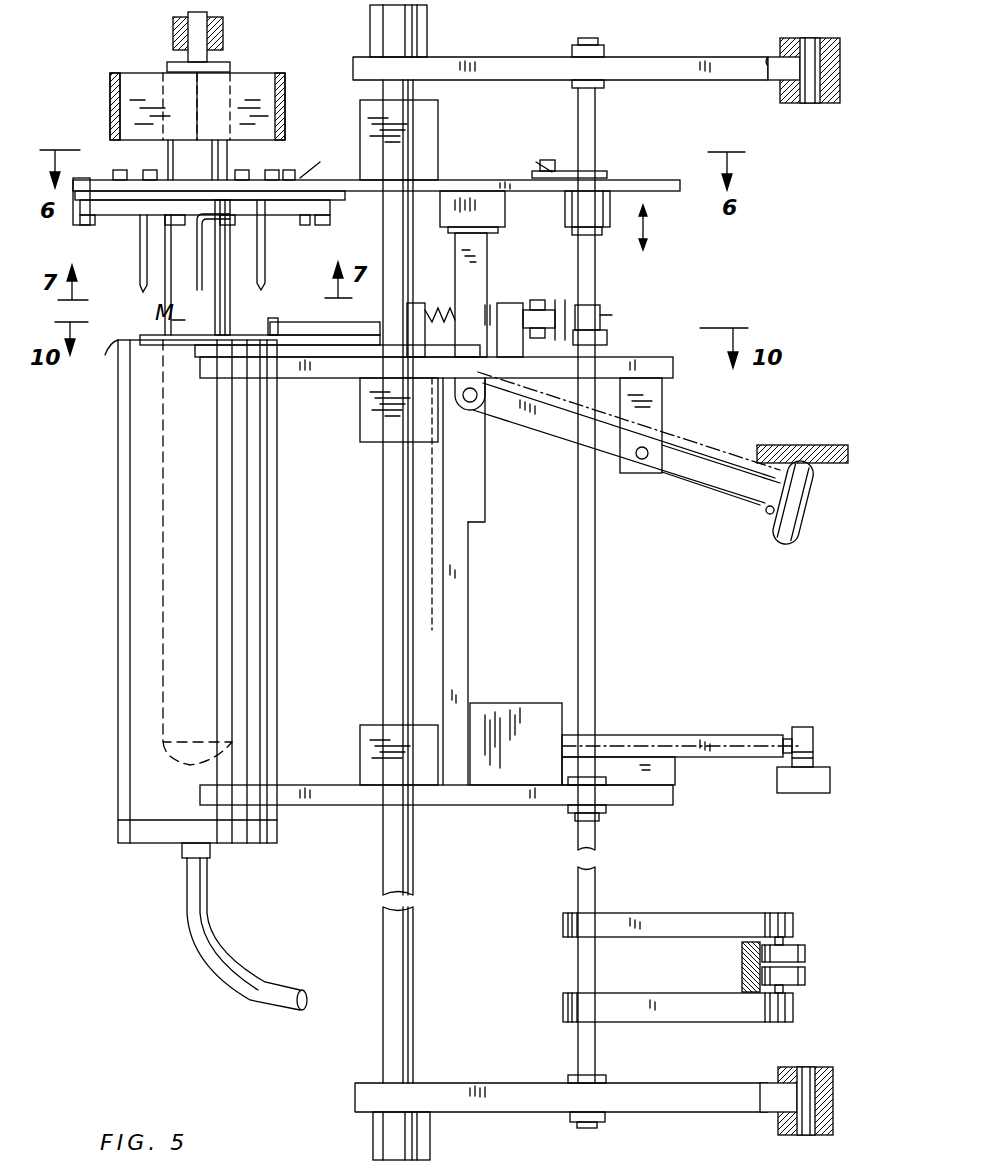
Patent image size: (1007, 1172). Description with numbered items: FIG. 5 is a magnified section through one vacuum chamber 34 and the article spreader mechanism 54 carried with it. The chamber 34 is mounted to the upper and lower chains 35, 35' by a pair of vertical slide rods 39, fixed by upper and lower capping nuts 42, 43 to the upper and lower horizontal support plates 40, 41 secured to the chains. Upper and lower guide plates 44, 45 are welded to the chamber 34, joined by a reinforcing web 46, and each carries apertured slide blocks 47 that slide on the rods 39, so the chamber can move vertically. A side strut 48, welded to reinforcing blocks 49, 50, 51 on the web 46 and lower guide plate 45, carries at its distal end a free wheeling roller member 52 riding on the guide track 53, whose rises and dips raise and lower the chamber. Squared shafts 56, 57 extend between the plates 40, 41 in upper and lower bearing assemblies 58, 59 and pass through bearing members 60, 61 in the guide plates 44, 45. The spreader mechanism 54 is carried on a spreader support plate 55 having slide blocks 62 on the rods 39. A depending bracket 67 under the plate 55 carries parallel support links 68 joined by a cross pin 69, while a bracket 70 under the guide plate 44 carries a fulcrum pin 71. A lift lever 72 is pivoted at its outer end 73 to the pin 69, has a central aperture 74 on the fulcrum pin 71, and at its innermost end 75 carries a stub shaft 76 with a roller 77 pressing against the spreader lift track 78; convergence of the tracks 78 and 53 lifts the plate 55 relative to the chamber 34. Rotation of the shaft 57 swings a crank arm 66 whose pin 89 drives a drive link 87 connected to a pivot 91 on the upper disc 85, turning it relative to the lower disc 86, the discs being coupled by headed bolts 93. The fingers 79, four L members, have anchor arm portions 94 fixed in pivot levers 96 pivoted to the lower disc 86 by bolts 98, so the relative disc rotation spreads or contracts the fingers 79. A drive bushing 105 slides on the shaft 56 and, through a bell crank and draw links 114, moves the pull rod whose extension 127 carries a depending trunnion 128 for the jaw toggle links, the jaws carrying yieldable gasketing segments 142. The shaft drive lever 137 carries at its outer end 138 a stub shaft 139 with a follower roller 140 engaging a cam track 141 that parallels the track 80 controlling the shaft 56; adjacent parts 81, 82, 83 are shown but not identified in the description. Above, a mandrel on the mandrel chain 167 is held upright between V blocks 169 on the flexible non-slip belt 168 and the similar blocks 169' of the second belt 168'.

The vacuum chamber 34 is at (118, 800).
The upper chain 35 is at (813, 52).
The lower chain 35' is at (796, 1085).
The slide rod 39 is at (383, 1057).
The upper horizontal support plate 40 is at (727, 55).
The lower horizontal support plate 41 is at (665, 1112).
The upper capping nut 42 is at (428, 30).
The lower capping nut 43 is at (373, 1145).
The upper guide plate 44 is at (290, 378).
The lower guide plate 45 is at (325, 805).
The reinforcing web 46 is at (443, 495).
The apertured slide block 47 is at (350, 770).
The side strut 48 is at (742, 735).
The reinforcing block 49 is at (648, 757).
The reinforcing block 50 is at (512, 703).
The reinforcing block 51 is at (468, 632).
The free wheeling roller member 52 is at (805, 727).
The guide track 53 is at (812, 793).
The article spreader mechanism 54 is at (304, 160).
The spreader support plate 55 is at (640, 180).
The squared shaft 56 is at (605, 955).
The squared shaft 57 is at (578, 880).
The upper bearing assembly 58 is at (600, 45).
The lower bearing assembly 59 is at (575, 1122).
The bearing member 60 is at (598, 775).
The bearing member 61 is at (560, 395).
The slide block 62 is at (438, 135).
The crank arm 66 is at (568, 150).
The depending bracket 67 is at (505, 208).
The support link 68 is at (487, 265).
The cross pin 69 is at (468, 402).
The bracket 70 is at (662, 400).
The fulcrum pin 71 is at (642, 460).
The lift lever 72 is at (700, 490).
The outer end of lift lever 73 is at (472, 402).
The central aperture 74 is at (662, 435).
The innermost end of lift lever 75 is at (766, 512).
The stub shaft 76 is at (806, 502).
The roller 77 is at (782, 540).
The spreader lift track 78 is at (768, 445).
The finger 79 is at (147, 260).
The track 80 is at (742, 965).
The bar 81 is at (715, 913).
The neck 82 is at (783, 941).
The collar 83 is at (805, 952).
The upper disc 85 is at (80, 178).
The lower disc 86 is at (78, 210).
The drive link 87 is at (520, 165).
The pin 89 is at (540, 162).
The pivot 91 is at (326, 155).
The headed bolt 93 is at (270, 172).
The anchor arm portion 94 is at (215, 235).
The pivot lever 96 is at (265, 255).
The bolt 98 is at (310, 228).
The drive bushing 105 is at (598, 305).
The draw link 114 is at (555, 365).
The extension 127 is at (320, 322).
The depending trunnion 128 is at (273, 318).
The shaft drive lever 137 is at (645, 1022).
The outer end of shaft drive lever 138 is at (793, 1010).
The stub shaft 139 is at (783, 989).
The follower roller 140 is at (805, 975).
The cam track 141 is at (742, 992).
The yieldable gasketing segment 142 is at (105, 355).
The mandrel chain 167 is at (173, 40).
The flexible non-slip belt 168 is at (303, 91).
The second belt 168' is at (82, 106).
The spaced block 169 is at (197, 82).
The pulley 169' is at (92, 89).